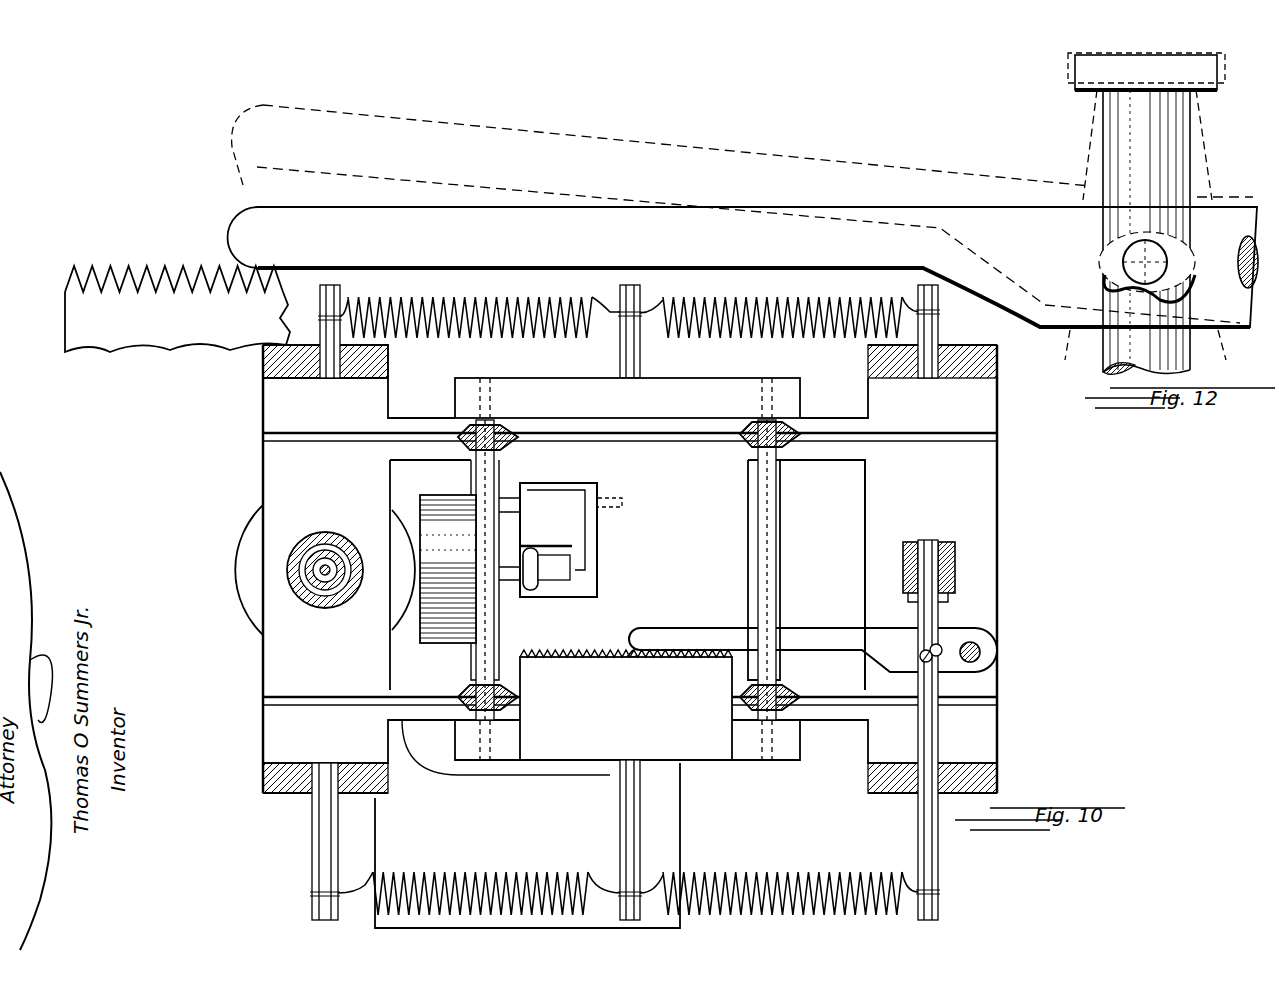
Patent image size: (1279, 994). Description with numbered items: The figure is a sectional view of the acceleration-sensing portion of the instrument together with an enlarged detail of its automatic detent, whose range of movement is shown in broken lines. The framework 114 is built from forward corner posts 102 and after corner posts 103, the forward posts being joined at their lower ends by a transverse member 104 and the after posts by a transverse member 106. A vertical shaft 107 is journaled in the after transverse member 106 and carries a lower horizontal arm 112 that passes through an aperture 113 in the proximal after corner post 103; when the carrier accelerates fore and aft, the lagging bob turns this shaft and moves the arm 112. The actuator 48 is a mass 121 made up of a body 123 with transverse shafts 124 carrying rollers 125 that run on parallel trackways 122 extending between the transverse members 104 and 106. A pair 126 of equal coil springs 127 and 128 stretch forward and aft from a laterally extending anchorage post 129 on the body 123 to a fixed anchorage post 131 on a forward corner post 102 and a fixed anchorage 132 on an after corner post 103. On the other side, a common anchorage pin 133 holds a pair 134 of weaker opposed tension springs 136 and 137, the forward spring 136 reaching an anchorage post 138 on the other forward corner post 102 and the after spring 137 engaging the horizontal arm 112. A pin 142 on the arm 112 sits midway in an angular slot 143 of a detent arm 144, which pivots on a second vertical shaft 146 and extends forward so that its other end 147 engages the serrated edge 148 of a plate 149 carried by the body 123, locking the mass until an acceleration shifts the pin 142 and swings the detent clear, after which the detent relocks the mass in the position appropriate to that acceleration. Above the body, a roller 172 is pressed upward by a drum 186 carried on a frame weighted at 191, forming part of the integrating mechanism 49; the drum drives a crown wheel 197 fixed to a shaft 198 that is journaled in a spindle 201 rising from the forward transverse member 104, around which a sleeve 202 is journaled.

In FIG. 10, the actuator 48 is at (712, 765).
In FIG. 10, the integrating mechanism 49 is at (603, 541).
In FIG. 10, the forward corner posts 102 is at (362, 772).
In FIG. 10, the after corner posts 103 is at (957, 374).
In FIG. 10, the transverse member 104 is at (335, 664).
In FIG. 10, the transverse member 106 is at (950, 496).
In FIG. 10, the vertical shaft 107 is at (904, 566).
In FIG. 12, the vertical shaft 107 is at (1122, 80).
In FIG. 10, the horizontal arm 112 is at (918, 845).
In FIG. 12, the horizontal arm 112 is at (1110, 140).
In FIG. 10, the aperture 113 is at (885, 774).
In FIG. 10, the framework 114 is at (262, 795).
In FIG. 10, the mass 121 is at (798, 763).
In FIG. 10, the trackways 122 is at (812, 440).
In FIG. 10, the body 123 is at (680, 586).
In FIG. 10, the transverse shafts 124 is at (777, 543).
In FIG. 10, the rollers 125 is at (746, 450).
In FIG. 10, the pair of coil springs 126 is at (556, 340).
In FIG. 10, the coil spring 127 is at (417, 334).
In FIG. 10, the coil spring 128 is at (835, 333).
In FIG. 10, the anchorage post 129 is at (620, 358).
In FIG. 10, the fixed anchorage post 131 is at (320, 329).
In FIG. 10, the fixed anchorage 132 is at (938, 321).
In FIG. 10, the common anchorage pin 133 is at (640, 824).
In FIG. 10, the pair of opposed tension springs 134 is at (557, 859).
In FIG. 10, the forward spring 136 is at (400, 880).
In FIG. 10, the coil spring 137 is at (812, 875).
In FIG. 10, the anchorage post 138 is at (312, 856).
In FIG. 10, the pin 142 is at (927, 652).
In FIG. 12, the pin 142 is at (1152, 248).
In FIG. 10, the angular slot 143 is at (918, 664).
In FIG. 12, the angular slot 143 is at (1105, 275).
In FIG. 10, the detent arm 144 is at (610, 250).
In FIG. 10, the second vertical shaft 146 is at (970, 642).
In FIG. 12, the second vertical shaft 146 is at (1240, 280).
In FIG. 10, the end of detent 147 is at (238, 268).
In FIG. 10, the serrated edge 148 is at (97, 276).
In FIG. 10, the plate 149 is at (170, 323).
In FIG. 10, the roller 172 is at (530, 550).
In FIG. 10, the drum 186 is at (437, 498).
In FIG. 10, the weight 191 is at (500, 805).
In FIG. 10, the driven crown wheel 197 is at (240, 590).
In FIG. 10, the shaft 198 is at (325, 560).
In FIG. 10, the spindle 201 is at (335, 585).
In FIG. 10, the sleeve 202 is at (313, 590).